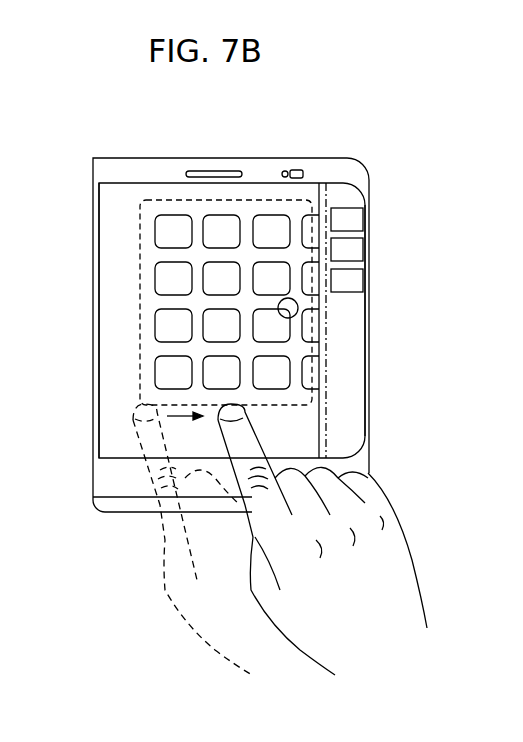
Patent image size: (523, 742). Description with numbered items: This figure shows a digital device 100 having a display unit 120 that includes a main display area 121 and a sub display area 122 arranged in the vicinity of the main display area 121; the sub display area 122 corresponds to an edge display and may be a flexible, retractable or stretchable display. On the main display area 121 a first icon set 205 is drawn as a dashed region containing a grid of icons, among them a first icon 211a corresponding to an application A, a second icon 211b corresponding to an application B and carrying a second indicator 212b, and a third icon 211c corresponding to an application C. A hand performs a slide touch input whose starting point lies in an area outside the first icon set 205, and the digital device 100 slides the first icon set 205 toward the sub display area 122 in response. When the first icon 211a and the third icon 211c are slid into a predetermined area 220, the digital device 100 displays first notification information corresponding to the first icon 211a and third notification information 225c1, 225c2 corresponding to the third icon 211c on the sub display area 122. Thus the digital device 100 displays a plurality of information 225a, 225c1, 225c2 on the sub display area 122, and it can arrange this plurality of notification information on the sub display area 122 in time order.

The digital device 100 is at (117, 158).
The display unit 120 is at (97, 350).
The main display area 121 is at (135, 228).
The sub display area 122 is at (343, 440).
The first icon set 205 is at (264, 199).
The first icon 211a is at (304, 257).
The second icon 211b is at (258, 338).
The third icon 211c is at (303, 366).
The second indicator 212b is at (277, 306).
The predetermined area 220 is at (327, 413).
The notification information 225a is at (364, 219).
The third notification information 225c1 is at (364, 250).
The third notification information 225c2 is at (364, 281).